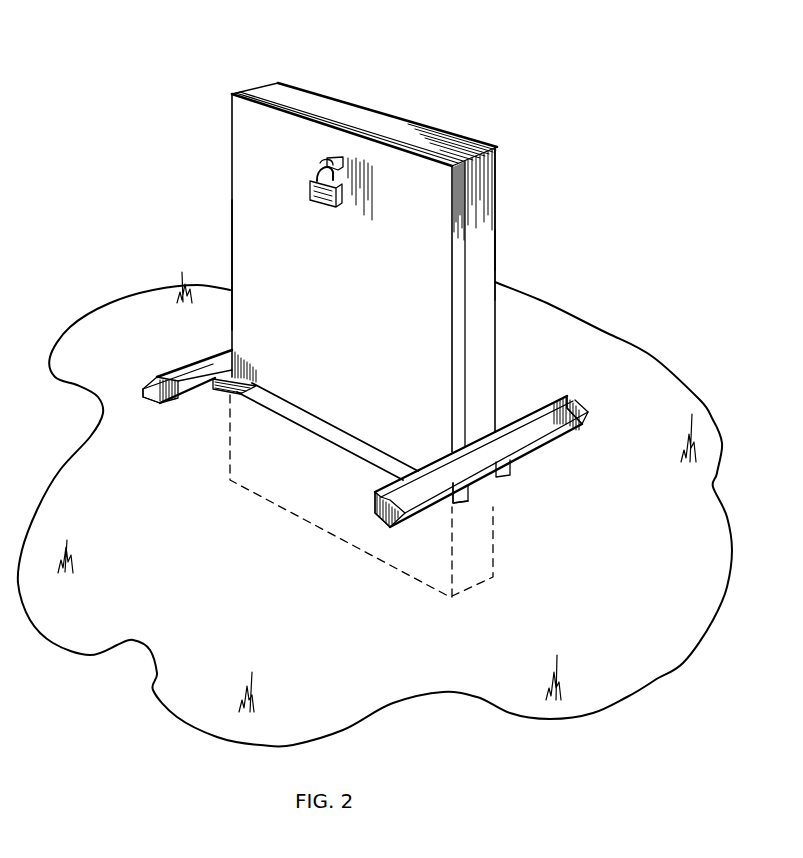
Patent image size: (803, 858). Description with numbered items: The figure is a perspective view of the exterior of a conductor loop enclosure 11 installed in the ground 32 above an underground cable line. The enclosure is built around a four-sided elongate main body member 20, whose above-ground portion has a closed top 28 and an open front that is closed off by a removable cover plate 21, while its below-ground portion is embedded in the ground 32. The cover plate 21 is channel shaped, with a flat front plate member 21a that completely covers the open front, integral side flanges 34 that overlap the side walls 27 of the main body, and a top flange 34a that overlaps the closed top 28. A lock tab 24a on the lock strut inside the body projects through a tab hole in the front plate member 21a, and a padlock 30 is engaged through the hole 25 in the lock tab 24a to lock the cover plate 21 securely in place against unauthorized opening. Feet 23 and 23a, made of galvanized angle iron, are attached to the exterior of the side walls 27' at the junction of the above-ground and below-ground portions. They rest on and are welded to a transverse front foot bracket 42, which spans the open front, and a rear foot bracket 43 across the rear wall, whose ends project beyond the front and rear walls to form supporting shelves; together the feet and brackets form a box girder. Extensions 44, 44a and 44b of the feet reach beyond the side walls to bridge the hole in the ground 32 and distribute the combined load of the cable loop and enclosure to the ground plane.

The conductor loop enclosure 11 is at (548, 122).
The main body member 20 is at (298, 82).
The cover plate 21 is at (232, 205).
The front plate member 21a is at (337, 330).
The foot 23 is at (207, 370).
The foot 23a is at (480, 480).
The lock tab 24a is at (335, 160).
The hole 25 is at (320, 163).
The side wall 27 is at (538, 289).
The side wall 27' is at (566, 236).
The closed top 28 is at (385, 123).
The padlock 30 is at (310, 186).
The ground 32 is at (332, 673).
The side flange 34 is at (462, 240).
The top flange 34a is at (340, 125).
The front foot bracket 42 is at (365, 448).
The rear foot bracket 43 is at (512, 473).
The foot extension 44 is at (190, 385).
The foot extension 44a is at (415, 498).
The foot extension 44b is at (572, 417).